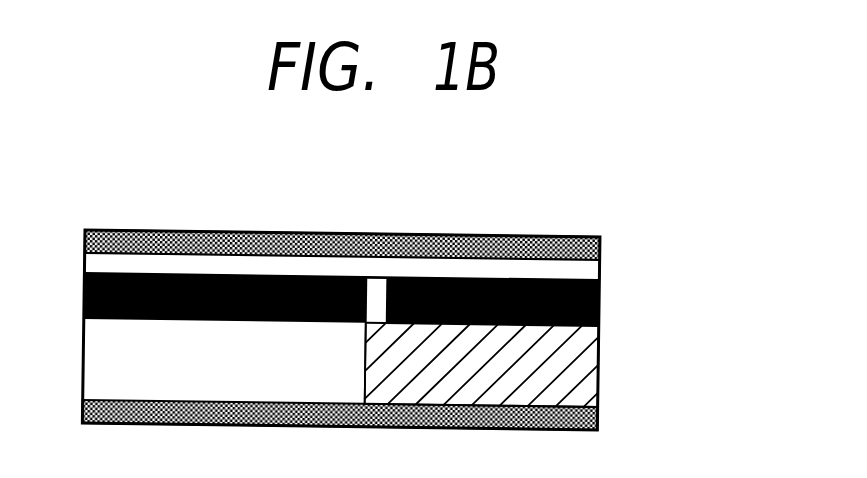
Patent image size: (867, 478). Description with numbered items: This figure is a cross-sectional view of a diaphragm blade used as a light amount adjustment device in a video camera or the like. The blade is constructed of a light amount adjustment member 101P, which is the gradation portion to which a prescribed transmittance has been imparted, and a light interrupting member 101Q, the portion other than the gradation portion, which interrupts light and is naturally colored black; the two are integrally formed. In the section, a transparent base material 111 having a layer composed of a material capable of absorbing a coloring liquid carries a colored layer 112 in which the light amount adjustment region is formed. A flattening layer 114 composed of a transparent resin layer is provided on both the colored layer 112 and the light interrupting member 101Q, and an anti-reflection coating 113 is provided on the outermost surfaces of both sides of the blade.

The light interrupting member 101Q is at (366, 224).
The light amount adjustment member 101P is at (522, 224).
The transparent base material 111 is at (593, 365).
The colored layer 112 is at (608, 278).
The anti-reflection coating 113 is at (600, 248).
The flattening layer 114 is at (590, 270).